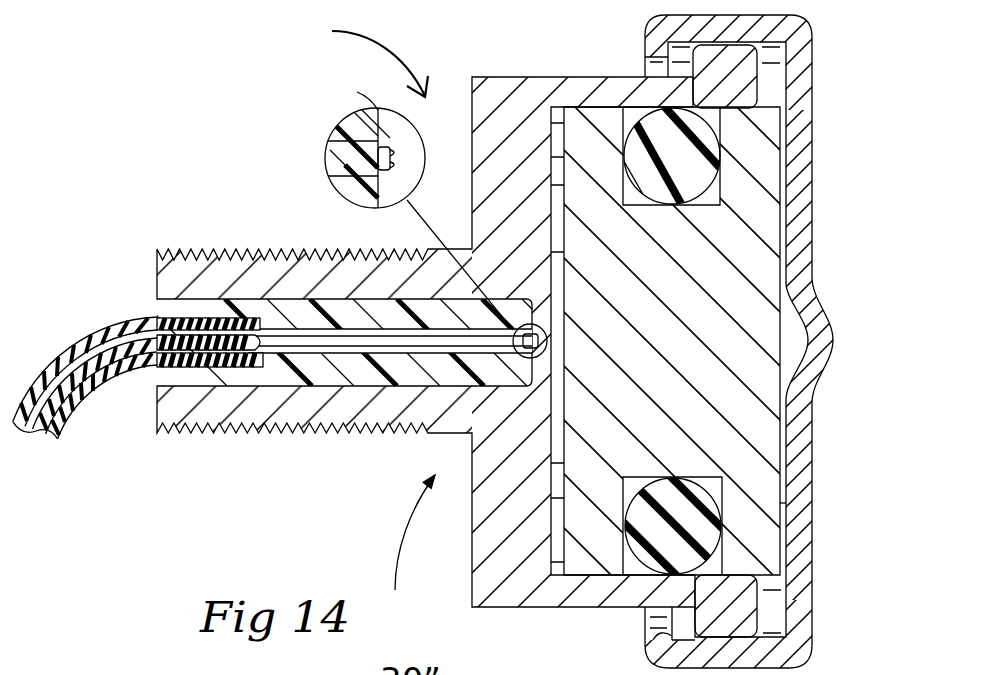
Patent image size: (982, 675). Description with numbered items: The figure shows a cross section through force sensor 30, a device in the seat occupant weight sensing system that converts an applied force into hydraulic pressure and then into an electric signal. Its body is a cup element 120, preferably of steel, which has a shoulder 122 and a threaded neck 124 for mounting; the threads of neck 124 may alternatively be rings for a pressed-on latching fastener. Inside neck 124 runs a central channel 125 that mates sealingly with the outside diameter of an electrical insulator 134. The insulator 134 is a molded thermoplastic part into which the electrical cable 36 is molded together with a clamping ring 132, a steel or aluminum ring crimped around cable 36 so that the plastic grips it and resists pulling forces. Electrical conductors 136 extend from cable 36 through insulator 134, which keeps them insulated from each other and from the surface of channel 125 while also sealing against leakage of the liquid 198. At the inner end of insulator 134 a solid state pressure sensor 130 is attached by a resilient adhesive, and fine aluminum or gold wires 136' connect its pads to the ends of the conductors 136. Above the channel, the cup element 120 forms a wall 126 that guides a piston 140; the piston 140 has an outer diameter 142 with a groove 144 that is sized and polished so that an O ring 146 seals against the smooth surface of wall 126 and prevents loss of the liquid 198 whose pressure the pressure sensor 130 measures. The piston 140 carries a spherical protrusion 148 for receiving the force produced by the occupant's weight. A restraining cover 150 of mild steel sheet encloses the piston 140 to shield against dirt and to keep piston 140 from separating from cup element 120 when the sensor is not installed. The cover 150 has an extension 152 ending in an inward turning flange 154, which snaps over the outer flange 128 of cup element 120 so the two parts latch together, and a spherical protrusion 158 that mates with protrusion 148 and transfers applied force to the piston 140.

The force sensor 30 is at (355, 55).
The electrical cable 36 is at (85, 397).
The cup element 120 is at (426, 342).
The shoulder 122 is at (426, 342).
The threaded neck 124 is at (437, 407).
The central channel 125 is at (374, 362).
The wall 126 is at (577, 122).
The outer flange 128 is at (738, 615).
The pressure sensor 130 is at (397, 159).
The clamping ring 132 is at (212, 315).
The electrical insulator 134 is at (298, 315).
The electrical conductors 136 is at (374, 345).
The fine wires 136' is at (346, 162).
The piston 140 is at (765, 169).
The outer diameter 142 is at (770, 100).
The groove 144 is at (640, 199).
The O ring 146 is at (675, 159).
The spherical protrusion 148 is at (785, 345).
The restraining cover 150 is at (725, 343).
The extension 152 is at (690, 632).
The inward turning flange 154 is at (662, 642).
The spherical protrusion 158 is at (833, 342).
The liquid 198 is at (406, 548).